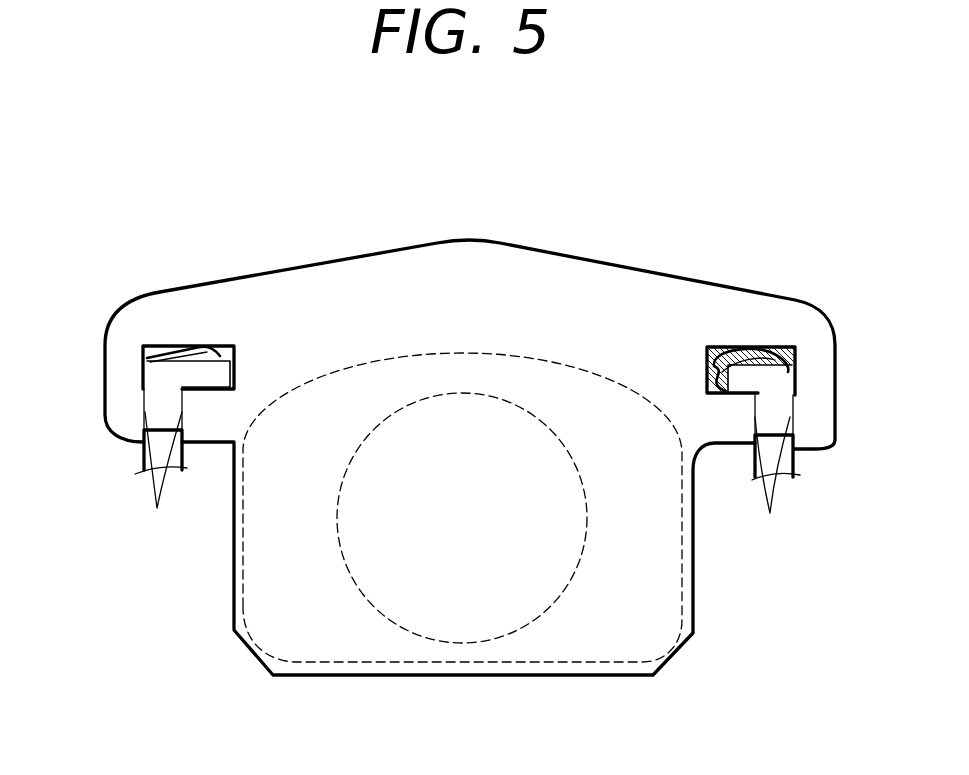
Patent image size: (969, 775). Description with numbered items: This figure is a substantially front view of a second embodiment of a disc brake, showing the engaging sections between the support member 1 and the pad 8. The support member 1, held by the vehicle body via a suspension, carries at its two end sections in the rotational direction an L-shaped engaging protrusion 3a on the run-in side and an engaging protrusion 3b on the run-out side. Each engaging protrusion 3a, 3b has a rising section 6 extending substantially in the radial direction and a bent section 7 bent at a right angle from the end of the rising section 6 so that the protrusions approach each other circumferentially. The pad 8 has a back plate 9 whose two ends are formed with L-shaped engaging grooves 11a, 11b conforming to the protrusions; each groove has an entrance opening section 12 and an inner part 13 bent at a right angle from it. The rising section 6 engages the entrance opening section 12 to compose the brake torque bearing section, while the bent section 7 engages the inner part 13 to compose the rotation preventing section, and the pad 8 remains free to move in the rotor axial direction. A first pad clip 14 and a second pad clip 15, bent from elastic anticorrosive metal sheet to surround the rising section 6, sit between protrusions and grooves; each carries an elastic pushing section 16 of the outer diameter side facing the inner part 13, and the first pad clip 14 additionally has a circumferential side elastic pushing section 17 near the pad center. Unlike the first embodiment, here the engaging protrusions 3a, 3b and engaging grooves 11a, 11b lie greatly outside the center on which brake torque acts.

The support member 1 is at (176, 468).
The engaging protrusion (run-in side support engaging section) 3a is at (783, 385).
The engaging protrusion (run-out side support engaging section) 3b is at (153, 382).
The rising section 6 is at (148, 448).
The bent section 7 is at (205, 375).
The pad 8 is at (605, 275).
The back plate 9 is at (525, 265).
The engaging groove (run-in side pad engaging section) 11a is at (793, 368).
The engaging groove (run-out side pad engaging section) 11b is at (147, 372).
The entrance opening section 12 is at (467, 479).
The inner part 13 is at (227, 348).
The first pad clip 14 is at (780, 347).
The second pad clip 15 is at (162, 350).
The elastic pushing section of the outer diameter side 16 is at (177, 348).
The circumferential side elastic pushing section 17 is at (705, 382).